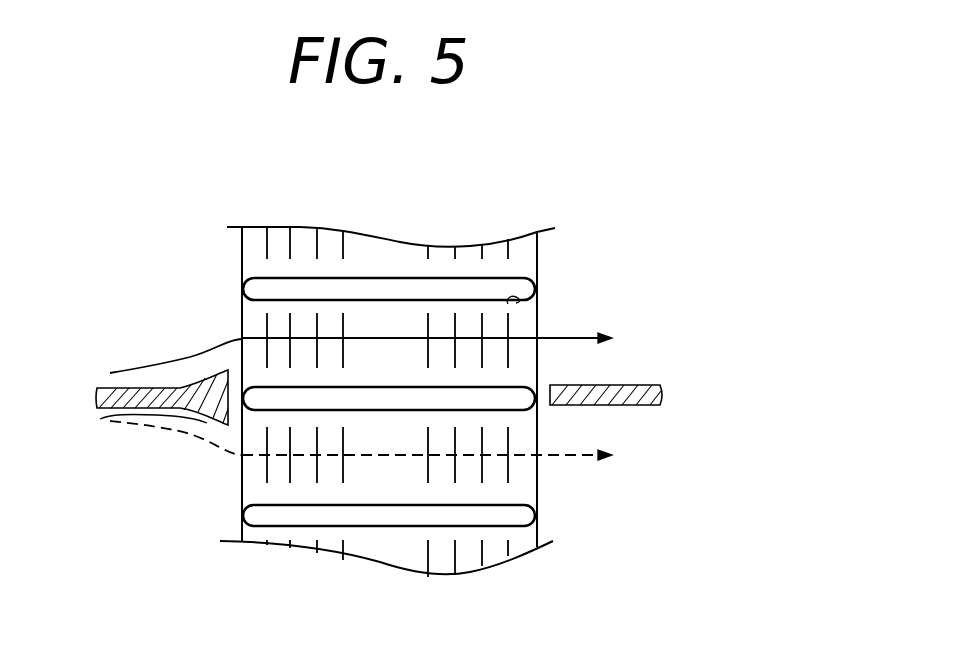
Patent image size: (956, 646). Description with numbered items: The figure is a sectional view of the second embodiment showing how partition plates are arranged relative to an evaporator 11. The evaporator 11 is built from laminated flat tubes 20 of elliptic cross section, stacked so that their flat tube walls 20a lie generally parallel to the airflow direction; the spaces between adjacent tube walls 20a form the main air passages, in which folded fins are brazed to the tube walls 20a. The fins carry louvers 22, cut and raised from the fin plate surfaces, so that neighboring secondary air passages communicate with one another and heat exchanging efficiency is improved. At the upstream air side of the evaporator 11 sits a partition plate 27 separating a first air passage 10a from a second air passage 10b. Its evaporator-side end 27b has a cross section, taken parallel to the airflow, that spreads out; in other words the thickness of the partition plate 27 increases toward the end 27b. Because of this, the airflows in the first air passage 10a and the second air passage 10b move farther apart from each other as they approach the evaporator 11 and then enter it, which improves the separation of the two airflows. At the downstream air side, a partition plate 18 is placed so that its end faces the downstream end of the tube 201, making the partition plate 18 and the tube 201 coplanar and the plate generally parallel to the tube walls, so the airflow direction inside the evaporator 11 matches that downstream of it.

The evaporator 11 is at (543, 188).
The louvers 22 is at (478, 552).
The tubes 20 is at (524, 284).
The tube walls 20a is at (508, 304).
The tube 201 is at (495, 392).
The partition plate 27 is at (108, 388).
The end 27b is at (100, 419).
The first air passage 10a is at (173, 344).
The second air passage 10b is at (175, 446).
The partition plate 18 is at (632, 394).